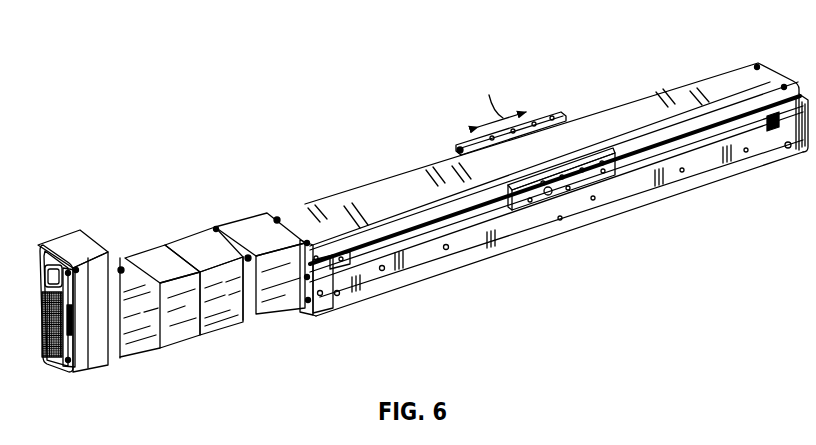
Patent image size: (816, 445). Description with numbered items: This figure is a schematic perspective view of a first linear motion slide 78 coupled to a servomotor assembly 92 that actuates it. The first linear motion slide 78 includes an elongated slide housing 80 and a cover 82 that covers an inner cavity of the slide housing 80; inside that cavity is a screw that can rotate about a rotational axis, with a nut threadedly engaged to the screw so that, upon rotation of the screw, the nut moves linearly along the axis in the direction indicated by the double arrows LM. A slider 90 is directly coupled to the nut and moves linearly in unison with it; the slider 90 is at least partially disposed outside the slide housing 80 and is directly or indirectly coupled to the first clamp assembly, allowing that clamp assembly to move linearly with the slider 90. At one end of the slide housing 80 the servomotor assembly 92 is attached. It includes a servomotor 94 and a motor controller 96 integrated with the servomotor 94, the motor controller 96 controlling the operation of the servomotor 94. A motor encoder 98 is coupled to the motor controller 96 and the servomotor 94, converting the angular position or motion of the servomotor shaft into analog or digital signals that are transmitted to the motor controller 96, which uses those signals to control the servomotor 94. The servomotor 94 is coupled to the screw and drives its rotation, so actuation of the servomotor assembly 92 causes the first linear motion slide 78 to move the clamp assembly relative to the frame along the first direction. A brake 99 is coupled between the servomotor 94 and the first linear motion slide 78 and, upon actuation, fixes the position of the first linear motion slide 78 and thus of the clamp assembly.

The first linear motion slide 78 is at (554, 164).
The slide housing 80 is at (657, 183).
The cover 82 is at (617, 122).
The slider 90 is at (588, 183).
The servomotor assembly 92 is at (60, 277).
The servomotor 94 is at (197, 240).
The motor controller 96 is at (56, 362).
The motor encoder 98 is at (143, 347).
The brake 99 is at (248, 225).